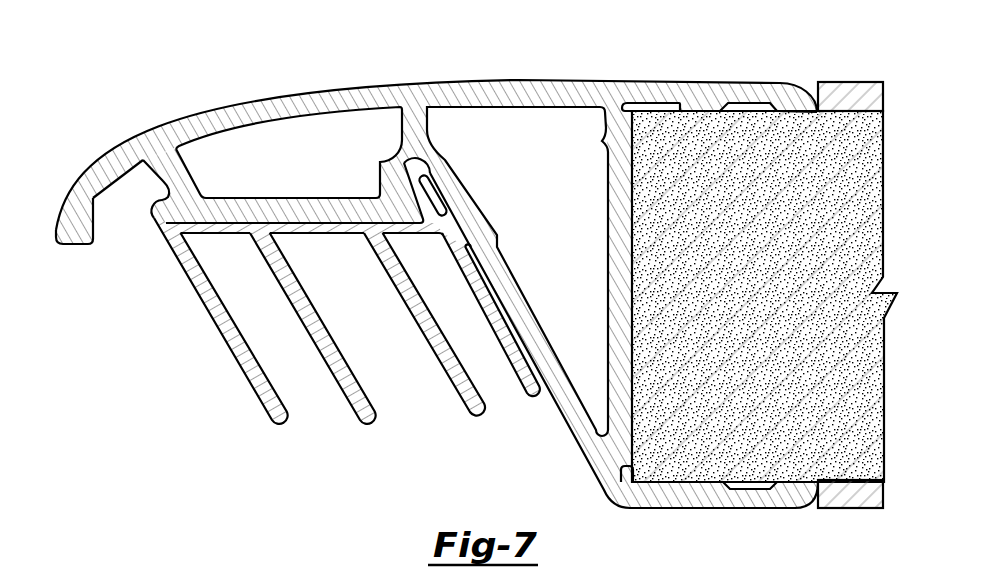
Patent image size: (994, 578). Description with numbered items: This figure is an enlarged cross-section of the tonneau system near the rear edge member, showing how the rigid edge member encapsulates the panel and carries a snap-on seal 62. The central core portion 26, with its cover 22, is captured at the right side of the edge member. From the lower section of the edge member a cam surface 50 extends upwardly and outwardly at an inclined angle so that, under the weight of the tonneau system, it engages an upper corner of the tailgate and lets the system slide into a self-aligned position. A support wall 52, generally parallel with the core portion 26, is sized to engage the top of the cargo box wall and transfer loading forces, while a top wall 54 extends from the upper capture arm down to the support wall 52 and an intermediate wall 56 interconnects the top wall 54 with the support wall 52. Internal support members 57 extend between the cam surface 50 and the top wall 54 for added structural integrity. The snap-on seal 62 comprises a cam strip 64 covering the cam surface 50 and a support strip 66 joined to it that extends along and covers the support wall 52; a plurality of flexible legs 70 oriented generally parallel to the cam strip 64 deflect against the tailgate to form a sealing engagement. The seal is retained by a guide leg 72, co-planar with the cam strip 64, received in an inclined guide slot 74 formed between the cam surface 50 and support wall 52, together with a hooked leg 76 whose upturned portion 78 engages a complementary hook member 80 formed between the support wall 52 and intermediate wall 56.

The cover 22 is at (843, 92).
The central core portion 26 is at (662, 165).
The cam surface 50 is at (512, 297).
The support wall 52 is at (320, 207).
The top wall 54 is at (243, 105).
The intermediate wall 56 is at (180, 158).
The internal support members 57 is at (427, 120).
The snap-on seal 62 is at (328, 321).
The cam strip 64 is at (532, 383).
The support strip 66 is at (328, 232).
The flexible legs 70 is at (353, 400).
The guide leg 72 is at (423, 190).
The guide slot 74 is at (413, 170).
The hooked leg 76 is at (150, 212).
The upturned portion 78 is at (172, 188).
The hook member 80 is at (155, 204).